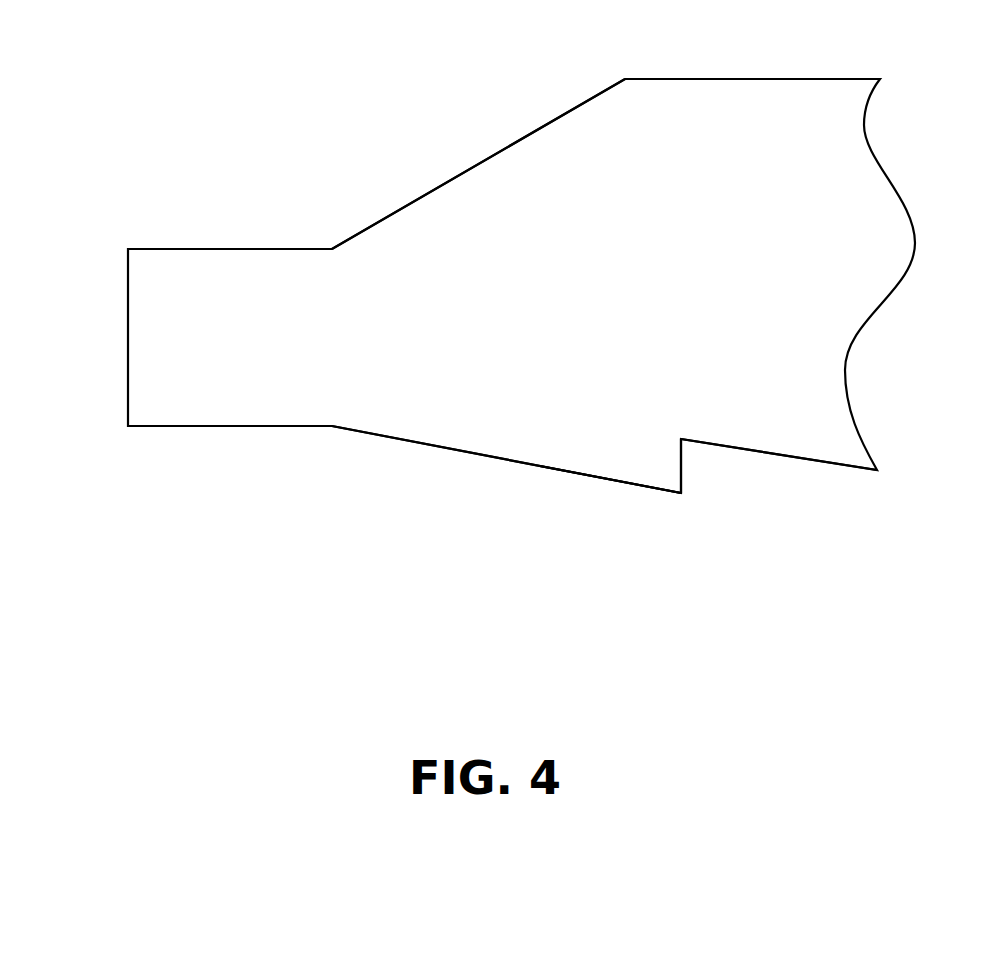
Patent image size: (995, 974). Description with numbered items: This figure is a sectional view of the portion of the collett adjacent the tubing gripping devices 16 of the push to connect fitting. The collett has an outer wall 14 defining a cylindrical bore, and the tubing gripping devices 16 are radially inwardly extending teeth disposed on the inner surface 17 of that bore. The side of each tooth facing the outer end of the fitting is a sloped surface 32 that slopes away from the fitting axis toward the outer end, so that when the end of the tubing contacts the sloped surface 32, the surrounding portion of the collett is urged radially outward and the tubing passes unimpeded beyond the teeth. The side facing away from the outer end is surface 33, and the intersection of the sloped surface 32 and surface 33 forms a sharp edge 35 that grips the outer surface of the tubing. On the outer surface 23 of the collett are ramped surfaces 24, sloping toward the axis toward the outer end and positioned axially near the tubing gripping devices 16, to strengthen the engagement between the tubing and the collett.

The outer wall 14 is at (185, 340).
The outer surface 23 is at (217, 249).
The ramped surfaces 24 is at (477, 165).
The inner surface 17 is at (233, 426).
The sloped surface 32 is at (540, 470).
The tubing gripping devices 16 is at (627, 486).
The sharp edge 35 is at (681, 493).
The surface 33 is at (681, 468).